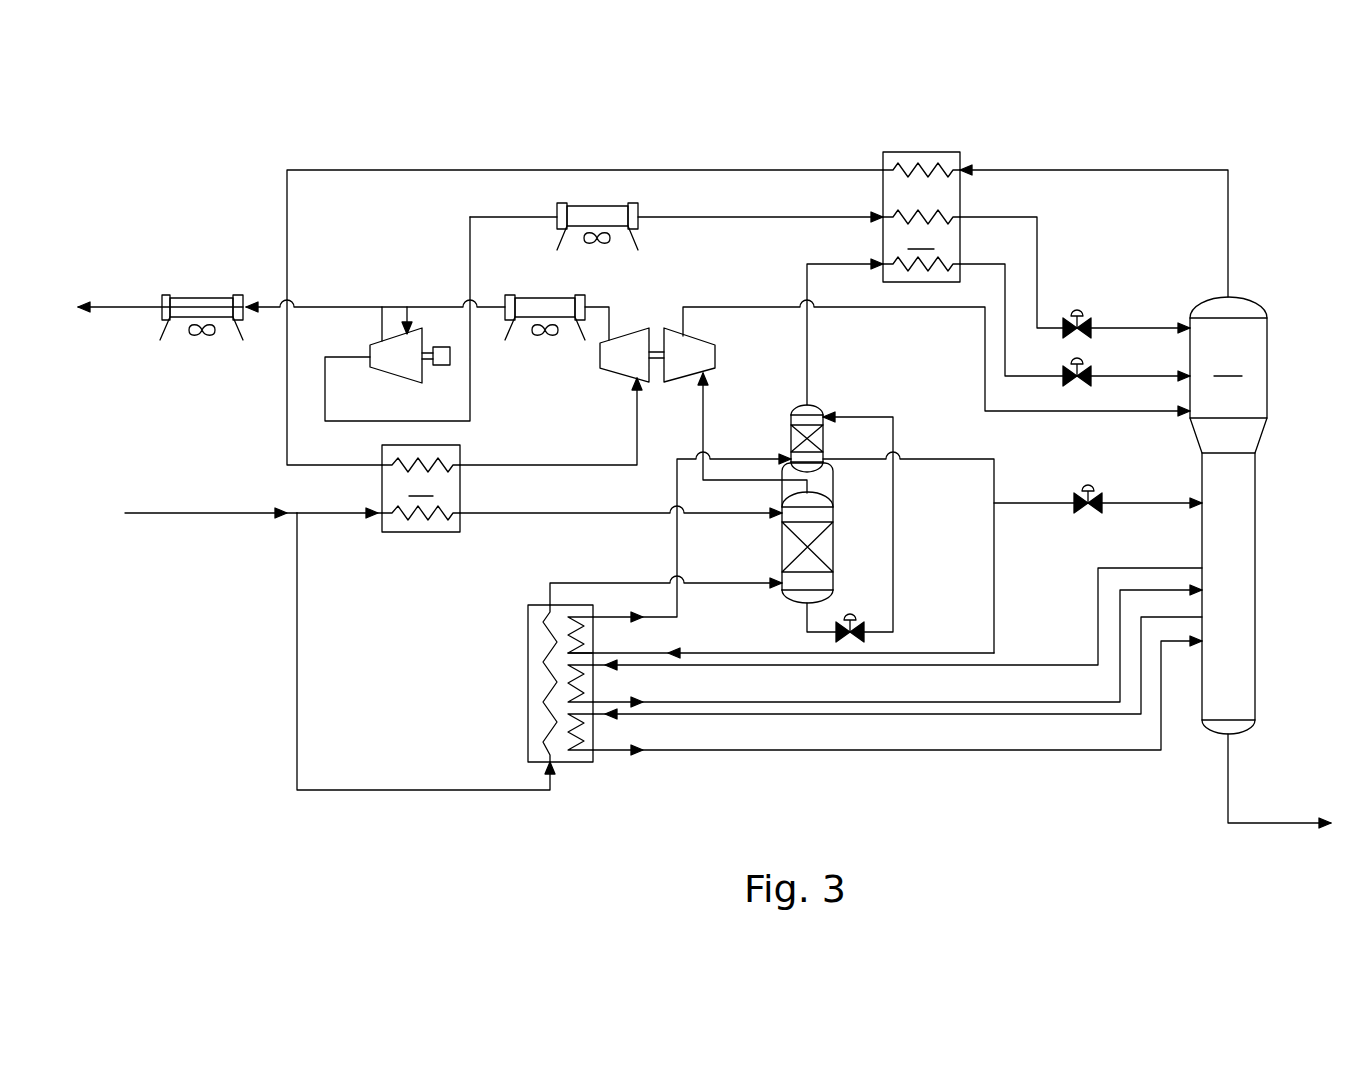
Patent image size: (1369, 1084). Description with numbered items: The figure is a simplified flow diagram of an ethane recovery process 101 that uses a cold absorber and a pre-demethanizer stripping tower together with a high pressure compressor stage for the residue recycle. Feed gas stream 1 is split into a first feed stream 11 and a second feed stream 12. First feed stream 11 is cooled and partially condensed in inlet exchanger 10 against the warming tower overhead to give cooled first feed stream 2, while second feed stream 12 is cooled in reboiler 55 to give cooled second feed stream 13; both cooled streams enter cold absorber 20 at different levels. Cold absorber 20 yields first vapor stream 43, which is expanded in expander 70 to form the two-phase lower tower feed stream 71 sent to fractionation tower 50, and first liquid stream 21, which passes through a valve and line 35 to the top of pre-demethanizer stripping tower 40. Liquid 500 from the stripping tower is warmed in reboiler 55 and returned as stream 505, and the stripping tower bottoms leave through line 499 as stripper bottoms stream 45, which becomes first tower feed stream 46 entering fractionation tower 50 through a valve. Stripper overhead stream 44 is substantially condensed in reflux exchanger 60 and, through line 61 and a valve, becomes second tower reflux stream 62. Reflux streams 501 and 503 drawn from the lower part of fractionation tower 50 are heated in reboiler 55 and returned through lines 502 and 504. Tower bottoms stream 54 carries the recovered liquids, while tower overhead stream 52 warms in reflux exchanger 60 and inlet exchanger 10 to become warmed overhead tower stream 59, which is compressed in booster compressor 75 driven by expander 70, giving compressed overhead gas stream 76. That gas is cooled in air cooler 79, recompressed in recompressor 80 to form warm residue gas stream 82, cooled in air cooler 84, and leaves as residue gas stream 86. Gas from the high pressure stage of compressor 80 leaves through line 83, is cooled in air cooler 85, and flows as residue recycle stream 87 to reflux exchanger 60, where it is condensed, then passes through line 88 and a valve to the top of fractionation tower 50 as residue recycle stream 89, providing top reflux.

The ethane recovery process 101 is at (270, 146).
The feed gas stream 1 is at (192, 512).
The cooled first feed stream 2 is at (555, 514).
The inlet exchanger 10 is at (421, 488).
The first feed stream 11 is at (330, 514).
The second feed stream 12 is at (345, 789).
The cooled second feed stream 13 is at (605, 582).
The cold absorber 20 is at (778, 556).
The first liquid stream 21 is at (803, 620).
The recycle line 35 is at (895, 572).
The pre-demethanizer stripping tower 40 is at (825, 406).
The first vapor stream 43 is at (708, 402).
The stripper overhead stream 44 is at (835, 262).
The stripper bottoms stream 45 is at (1028, 500).
The first tower feed stream 46 is at (1118, 505).
The fractionation tower 50 is at (1228, 515).
The tower overhead stream 52 is at (1163, 170).
The tower bottoms stream 54 is at (1290, 822).
The reboiler 55 is at (537, 707).
The warmed overhead tower stream 59 is at (615, 464).
The reflux exchanger 60 is at (921, 217).
The exchanger outlet line 61 is at (975, 262).
The second tower reflux stream 62 is at (1105, 372).
The expander 70 is at (685, 356).
The lower tower feed stream 71 is at (1125, 420).
The booster compressor 75 is at (625, 348).
The compressed overhead gas stream 76 is at (605, 305).
The air cooler 79 is at (548, 300).
The recompressor 80 is at (405, 352).
The warm residue gas stream 82 is at (345, 305).
The compressor feed line 83 is at (360, 428).
The air cooler 84 is at (196, 304).
The air cooler 85 is at (596, 218).
The residue gas stream 86 is at (110, 310).
The residue recycle stream 87 is at (738, 214).
The exchanger outlet line 88 is at (1045, 252).
The residue recycle stream 89 is at (1108, 324).
The separator outlet line 499 is at (948, 460).
The liquid from the stripping tower 500 is at (908, 652).
The first tower sidestream 501 is at (1095, 642).
The column return line 502 is at (838, 700).
The second tower sidestream 503 is at (935, 716).
The column return line 504 is at (1025, 752).
The return stream 505 is at (762, 456).